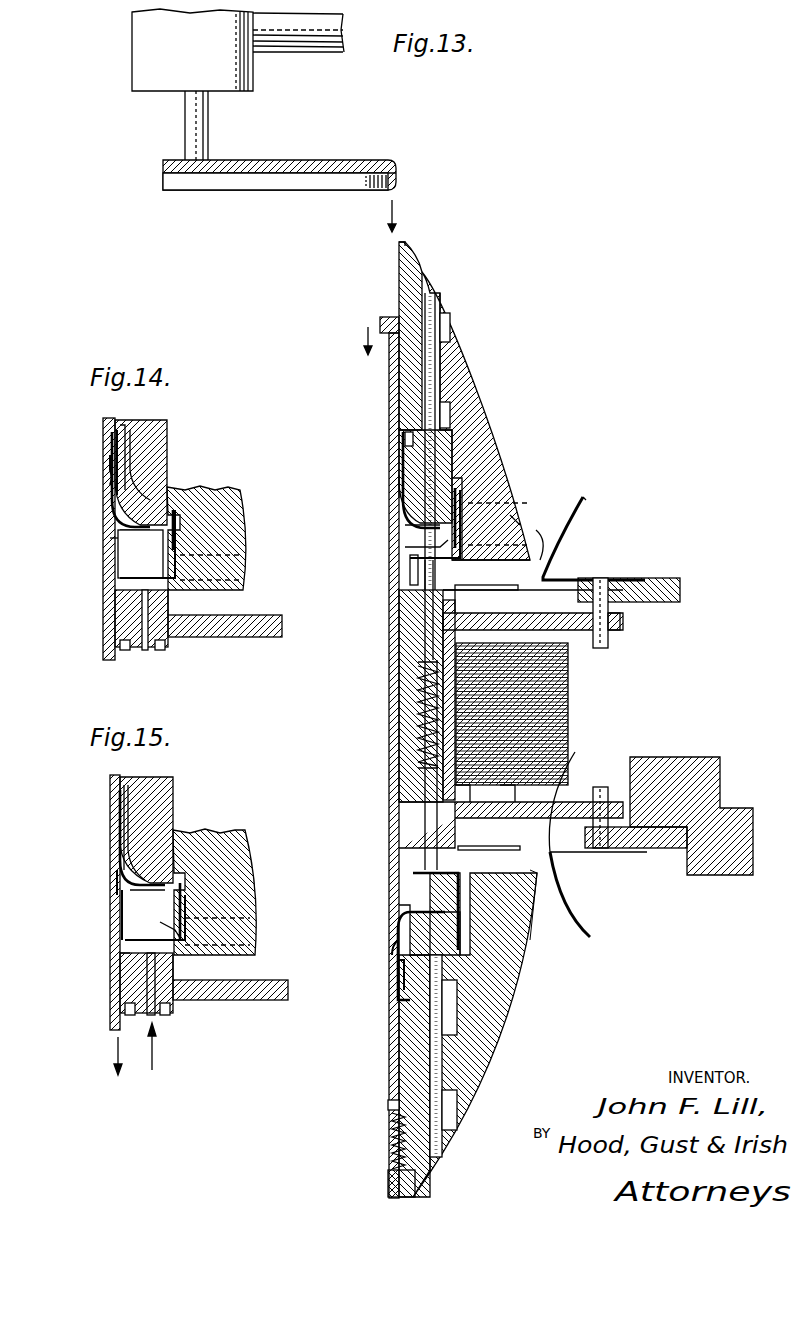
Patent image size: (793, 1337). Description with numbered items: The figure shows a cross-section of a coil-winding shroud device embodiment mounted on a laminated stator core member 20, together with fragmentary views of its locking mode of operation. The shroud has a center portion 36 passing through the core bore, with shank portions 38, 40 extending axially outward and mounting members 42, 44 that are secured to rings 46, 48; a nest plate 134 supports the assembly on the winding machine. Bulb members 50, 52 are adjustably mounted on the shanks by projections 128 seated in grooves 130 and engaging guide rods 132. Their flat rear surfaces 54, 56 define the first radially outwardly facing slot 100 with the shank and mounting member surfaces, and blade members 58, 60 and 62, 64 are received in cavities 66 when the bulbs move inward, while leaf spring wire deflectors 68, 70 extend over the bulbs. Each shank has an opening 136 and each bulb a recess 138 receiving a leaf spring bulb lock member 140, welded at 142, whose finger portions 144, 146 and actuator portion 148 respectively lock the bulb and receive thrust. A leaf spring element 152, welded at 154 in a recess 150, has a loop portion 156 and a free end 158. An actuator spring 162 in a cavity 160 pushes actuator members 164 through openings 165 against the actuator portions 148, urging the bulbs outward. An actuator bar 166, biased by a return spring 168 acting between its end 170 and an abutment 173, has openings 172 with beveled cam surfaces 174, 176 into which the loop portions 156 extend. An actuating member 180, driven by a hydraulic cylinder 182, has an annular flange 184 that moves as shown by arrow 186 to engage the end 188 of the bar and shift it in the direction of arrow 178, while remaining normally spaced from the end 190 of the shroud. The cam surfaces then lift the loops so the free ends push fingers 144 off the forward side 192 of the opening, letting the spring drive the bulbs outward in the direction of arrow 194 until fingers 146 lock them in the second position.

In FIG. 13, the stator core member 20 is at (570, 690).
In FIG. 13, the center portion 36 is at (408, 648).
In FIG. 13, the shank portion 38 is at (394, 362).
In FIG. 14, the shank portion 38 is at (170, 446).
In FIG. 15, the shank portion 38 is at (160, 786).
In FIG. 13, the shank portion 40 is at (410, 1023).
In FIG. 13, the mounting member 42 is at (622, 622).
In FIG. 14, the mounting member 42 is at (250, 638).
In FIG. 15, the mounting member 42 is at (270, 985).
In FIG. 13, the mounting member 44 is at (548, 620).
In FIG. 13, the ring 46 is at (658, 577).
In FIG. 13, the ring 48 is at (660, 850).
In FIG. 13, the bulb member 50 is at (487, 377).
In FIG. 14, the bulb member 50 is at (217, 496).
In FIG. 15, the bulb member 50 is at (217, 832).
In FIG. 13, the bulb member 52 is at (512, 1000).
In FIG. 13, the flat rear surface 54 is at (550, 537).
In FIG. 13, the flat rear surface 56 is at (522, 870).
In FIG. 13, the blade member 58 is at (529, 505).
In FIG. 13, the blade member 60 is at (498, 590).
In FIG. 13, the blade member 62 is at (502, 846).
In FIG. 13, the blade member 64 is at (488, 878).
In FIG. 13, the cavity 66 is at (565, 938).
In FIG. 13, the leaf spring wire deflector 68 is at (560, 530).
In FIG. 13, the leaf spring wire deflector 70 is at (572, 920).
In FIG. 14, the first radially outwardly facing slot 100 is at (225, 602).
In FIG. 15, the first radially outwardly facing slot 100 is at (225, 970).
In FIG. 13, the projection 128 is at (441, 357).
In FIG. 13, the groove 130 is at (448, 326).
In FIG. 13, the guide rod 132 is at (449, 427).
In FIG. 13, the nest plate 134 is at (697, 757).
In FIG. 13, the opening 136 is at (410, 574).
In FIG. 14, the opening 136 is at (128, 563).
In FIG. 13, the recess 138 is at (466, 492).
In FIG. 13, the leaf spring bulb lock member 140 is at (492, 497).
In FIG. 14, the leaf spring bulb lock member 140 is at (242, 530).
In FIG. 15, the leaf spring bulb lock member 140 is at (252, 890).
In FIG. 13, the weld 142 is at (460, 564).
In FIG. 13, the leaf spring finger portion 144 is at (460, 507).
In FIG. 14, the leaf spring finger portion 144 is at (185, 522).
In FIG. 15, the leaf spring finger portion 144 is at (185, 893).
In FIG. 13, the leaf spring finger portion 146 is at (402, 545).
In FIG. 15, the leaf spring finger portion 146 is at (160, 926).
In FIG. 13, the actuator portion 148 is at (408, 585).
In FIG. 14, the actuator portion 148 is at (130, 579).
In FIG. 15, the actuator portion 148 is at (130, 940).
In FIG. 13, the recess 150 is at (403, 445).
In FIG. 13, the leaf spring element 152 is at (392, 489).
In FIG. 14, the leaf spring element 152 is at (167, 490).
In FIG. 15, the leaf spring element 152 is at (126, 845).
In FIG. 13, the weld 154 is at (406, 441).
In FIG. 13, the loop portion 156 is at (396, 510).
In FIG. 14, the loop portion 156 is at (104, 515).
In FIG. 15, the loop portion 156 is at (120, 866).
In FIG. 13, the free end 158 is at (410, 533).
In FIG. 14, the free end 158 is at (138, 543).
In FIG. 15, the free end 158 is at (144, 903).
In FIG. 13, the cavity 160 is at (422, 780).
In FIG. 13, the actuator spring 162 is at (420, 690).
In FIG. 13, the actuator member 164 is at (407, 608).
In FIG. 15, the actuator member 164 is at (146, 975).
In FIG. 13, the opening 165 is at (410, 632).
In FIG. 13, the actuator bar 166 is at (397, 808).
In FIG. 14, the actuator bar 166 is at (112, 606).
In FIG. 15, the actuator bar 166 is at (115, 999).
In FIG. 13, the return spring 168 is at (395, 1128).
In FIG. 13, the end 170 is at (387, 1107).
In FIG. 13, the opening 172 is at (390, 960).
In FIG. 14, the opening 172 is at (110, 480).
In FIG. 15, the opening 172 is at (118, 899).
In FIG. 13, the abutment 173 is at (387, 1186).
In FIG. 13, the beveled cam surface 174 is at (397, 912).
In FIG. 14, the beveled cam surface 174 is at (108, 538).
In FIG. 15, the beveled cam surface 174 is at (118, 952).
In FIG. 13, the beveled cam surface 176 is at (400, 975).
In FIG. 14, the beveled cam surface 176 is at (102, 470).
In FIG. 15, the beveled cam surface 176 is at (112, 882).
In FIG. 13, the arrow 178 is at (364, 338).
In FIG. 15, the arrow 178 is at (115, 1060).
In FIG. 13, the actuating member 180 is at (340, 160).
In FIG. 13, the hydraulic cylinder 182 is at (150, 47).
In FIG. 13, the annular flange 184 is at (396, 180).
In FIG. 13, the arrow 186 is at (393, 208).
In FIG. 13, the end 188 is at (388, 318).
In FIG. 13, the end 190 is at (406, 244).
In FIG. 14, the forward side 192 is at (172, 496).
In FIG. 15, the forward side 192 is at (185, 838).
In FIG. 15, the arrow 194 is at (154, 1050).